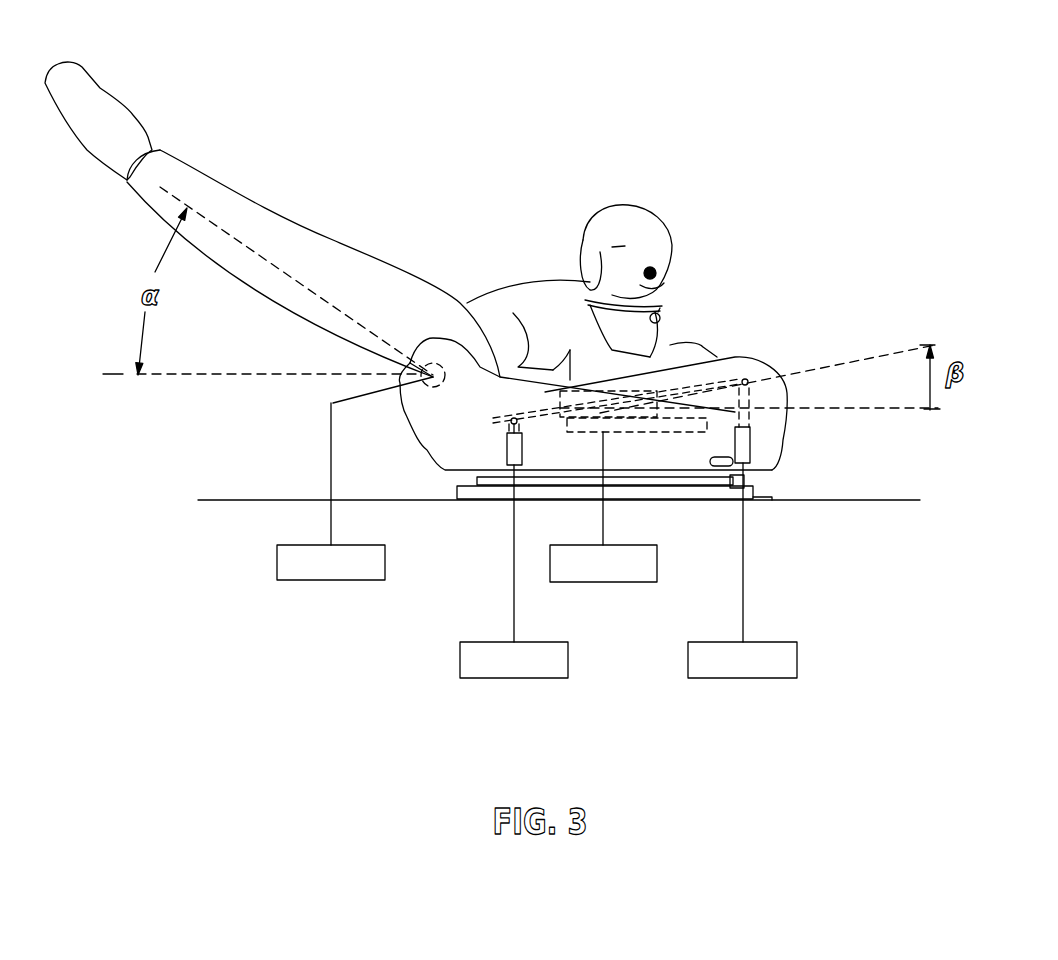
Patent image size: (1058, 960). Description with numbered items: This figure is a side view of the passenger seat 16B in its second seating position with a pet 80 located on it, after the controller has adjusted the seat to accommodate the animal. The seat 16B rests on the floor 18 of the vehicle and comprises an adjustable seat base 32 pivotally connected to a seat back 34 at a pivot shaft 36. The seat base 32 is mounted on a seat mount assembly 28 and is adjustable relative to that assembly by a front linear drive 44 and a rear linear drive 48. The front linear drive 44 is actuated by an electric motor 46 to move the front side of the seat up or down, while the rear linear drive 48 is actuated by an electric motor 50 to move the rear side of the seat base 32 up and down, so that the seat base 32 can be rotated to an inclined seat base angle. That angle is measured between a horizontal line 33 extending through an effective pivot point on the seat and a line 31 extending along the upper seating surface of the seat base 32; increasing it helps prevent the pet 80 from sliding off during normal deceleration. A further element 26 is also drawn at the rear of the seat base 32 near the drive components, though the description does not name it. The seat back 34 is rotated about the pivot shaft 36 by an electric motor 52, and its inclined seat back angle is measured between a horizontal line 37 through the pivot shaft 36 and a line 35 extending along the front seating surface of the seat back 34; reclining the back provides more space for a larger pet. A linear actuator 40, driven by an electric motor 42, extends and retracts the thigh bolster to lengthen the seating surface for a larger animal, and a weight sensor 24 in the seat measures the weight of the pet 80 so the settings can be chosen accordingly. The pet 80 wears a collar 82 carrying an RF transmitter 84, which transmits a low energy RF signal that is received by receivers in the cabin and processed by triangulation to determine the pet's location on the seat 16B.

The passenger seat 16B is at (106, 84).
The seat back 34 is at (158, 217).
The line along front seating surface of seat back 35 is at (310, 287).
The pivot shaft 36 is at (443, 363).
The horizontal line 37 is at (118, 376).
The seat base 32 is at (447, 437).
The floor 18 is at (228, 500).
The electric motor 52 is at (277, 562).
The rear linear drive 48 is at (506, 454).
The electric motor 50 is at (568, 665).
The electric motor 42 is at (645, 545).
The weight sensor 24 is at (610, 390).
The pet 80 is at (611, 203).
The collar 82 is at (662, 298).
The RF transmitter 84 is at (663, 322).
The linear actuator 40 is at (723, 425).
The line along upper seating surface of seat base 31 is at (863, 357).
The horizontal line 33 is at (883, 412).
The tilt actuator 26 is at (726, 453).
The front linear drive 44 is at (777, 452).
The seat mount assembly 28 is at (772, 490).
The electric motor 46 is at (797, 665).